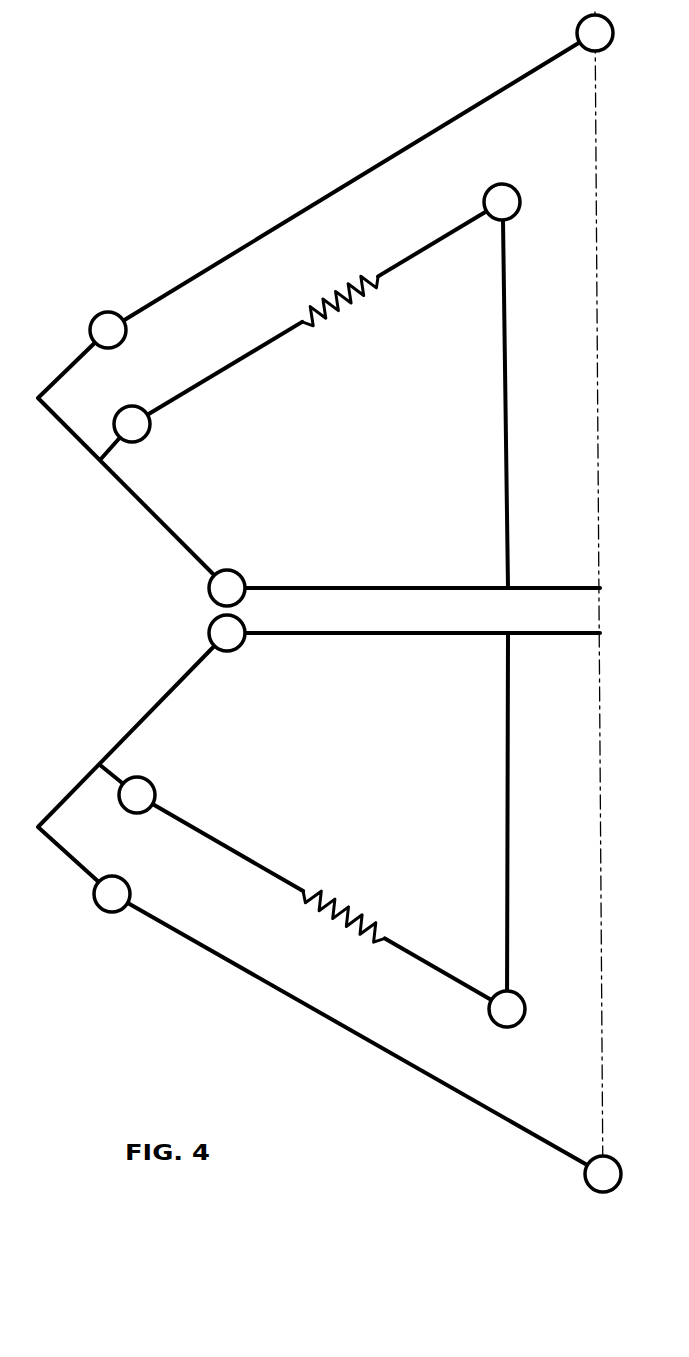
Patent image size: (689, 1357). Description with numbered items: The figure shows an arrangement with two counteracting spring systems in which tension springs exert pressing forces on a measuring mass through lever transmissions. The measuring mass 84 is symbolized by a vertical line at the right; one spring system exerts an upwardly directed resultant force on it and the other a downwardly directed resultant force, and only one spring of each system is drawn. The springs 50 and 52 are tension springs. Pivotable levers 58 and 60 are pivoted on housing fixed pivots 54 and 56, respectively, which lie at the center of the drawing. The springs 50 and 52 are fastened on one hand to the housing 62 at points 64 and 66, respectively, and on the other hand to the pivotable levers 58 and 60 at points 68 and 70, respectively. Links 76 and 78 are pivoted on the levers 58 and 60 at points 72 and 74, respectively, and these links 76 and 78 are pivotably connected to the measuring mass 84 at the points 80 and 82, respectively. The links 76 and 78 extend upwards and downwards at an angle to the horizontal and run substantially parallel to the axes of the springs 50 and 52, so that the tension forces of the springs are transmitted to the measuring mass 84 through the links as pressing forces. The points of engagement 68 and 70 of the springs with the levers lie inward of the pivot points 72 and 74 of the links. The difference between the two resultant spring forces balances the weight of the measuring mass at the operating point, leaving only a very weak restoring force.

The tension spring 50 is at (340, 318).
The tension spring 52 is at (382, 925).
The housing fixed pivot 54 is at (213, 590).
The housing fixed pivot 56 is at (213, 634).
The pivotable lever 58 is at (147, 512).
The pivotable lever 60 is at (130, 728).
The housing 62 is at (506, 440).
The fastening point 64 is at (503, 188).
The fastening point 66 is at (522, 1013).
The point of engagement 68 is at (131, 412).
The point of engagement 70 is at (153, 797).
The pivot point 72 is at (104, 316).
The pivot point 74 is at (95, 898).
The link 76 is at (253, 238).
The link 78 is at (242, 972).
The connection point 80 is at (591, 52).
The connection point 82 is at (620, 1173).
The measuring mass 84 is at (597, 428).